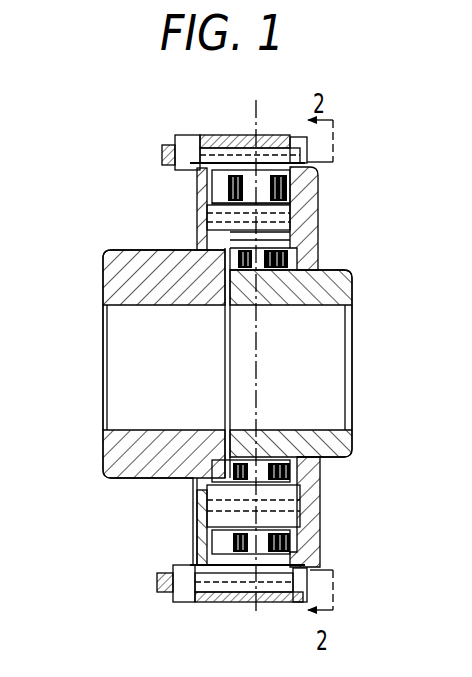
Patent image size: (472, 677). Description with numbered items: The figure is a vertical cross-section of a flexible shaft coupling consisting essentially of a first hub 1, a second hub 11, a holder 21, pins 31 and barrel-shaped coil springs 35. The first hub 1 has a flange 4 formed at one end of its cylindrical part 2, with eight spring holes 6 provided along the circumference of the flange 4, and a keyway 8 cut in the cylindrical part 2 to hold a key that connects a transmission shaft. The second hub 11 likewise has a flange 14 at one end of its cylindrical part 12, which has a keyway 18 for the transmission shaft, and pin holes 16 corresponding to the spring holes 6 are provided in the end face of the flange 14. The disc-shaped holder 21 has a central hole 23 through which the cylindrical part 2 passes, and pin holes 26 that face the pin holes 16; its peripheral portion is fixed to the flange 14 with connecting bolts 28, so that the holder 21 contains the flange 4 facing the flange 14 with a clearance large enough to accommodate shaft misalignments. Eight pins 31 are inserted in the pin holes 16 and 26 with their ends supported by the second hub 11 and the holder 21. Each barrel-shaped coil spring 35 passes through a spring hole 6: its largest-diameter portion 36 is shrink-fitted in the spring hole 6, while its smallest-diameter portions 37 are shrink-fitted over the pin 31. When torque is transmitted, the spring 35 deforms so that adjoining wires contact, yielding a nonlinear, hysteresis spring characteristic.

The first hub 1 is at (341, 266).
The cylindrical part 2 is at (352, 292).
The flange 4 is at (273, 138).
The spring holes 6 is at (318, 190).
The keyway 8 is at (347, 405).
The second hub 11 is at (118, 248).
The cylindrical part 12 is at (100, 275).
The flange 14 is at (200, 233).
The pin holes 16 is at (200, 203).
The keyway 18 is at (107, 428).
The holder 21 is at (325, 553).
The hole 23 is at (340, 458).
The pin holes 26 is at (320, 522).
The connecting bolts 28 is at (277, 592).
The pins 31 is at (205, 505).
The barrel-shaped coil spring 35 is at (236, 137).
The largest-diameter portion 36 is at (258, 135).
The smallest-diameter portions 37 is at (212, 197).